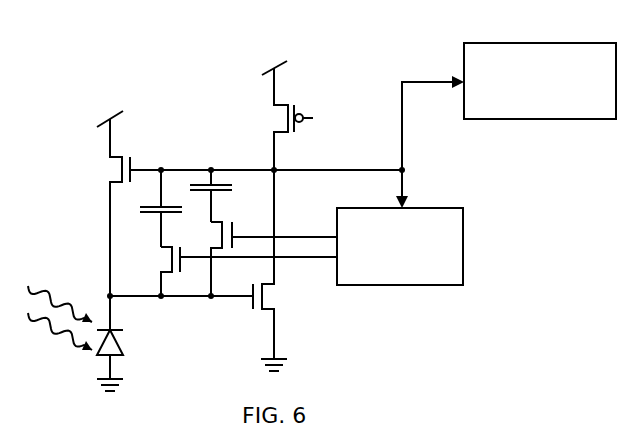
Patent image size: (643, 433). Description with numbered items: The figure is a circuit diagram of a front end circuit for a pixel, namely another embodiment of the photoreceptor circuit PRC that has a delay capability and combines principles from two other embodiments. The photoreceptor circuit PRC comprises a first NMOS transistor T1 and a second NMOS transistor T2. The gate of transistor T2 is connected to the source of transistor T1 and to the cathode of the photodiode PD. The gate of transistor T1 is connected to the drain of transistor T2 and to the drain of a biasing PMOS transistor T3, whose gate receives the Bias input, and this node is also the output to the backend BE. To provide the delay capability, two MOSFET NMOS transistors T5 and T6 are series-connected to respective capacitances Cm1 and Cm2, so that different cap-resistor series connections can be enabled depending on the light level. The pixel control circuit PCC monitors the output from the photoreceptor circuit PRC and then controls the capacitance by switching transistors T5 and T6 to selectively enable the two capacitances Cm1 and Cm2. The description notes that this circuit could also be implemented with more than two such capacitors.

The photoreceptor circuit PRC is at (100, 97).
The first NMOS transistor T1 is at (124, 170).
The second NMOS transistor T2 is at (262, 302).
The biasing PMOS transistor T3 is at (288, 120).
The MOSFET NMOS transistor T5 is at (172, 262).
The MOSFET NMOS transistor T6 is at (222, 238).
The capacitance Cm1 is at (150, 208).
The capacitance Cm2 is at (223, 196).
The bias voltage input Bias is at (323, 120).
The photodiode PD is at (122, 348).
The backend BE is at (528, 103).
The pixel control circuit PCC is at (449, 266).